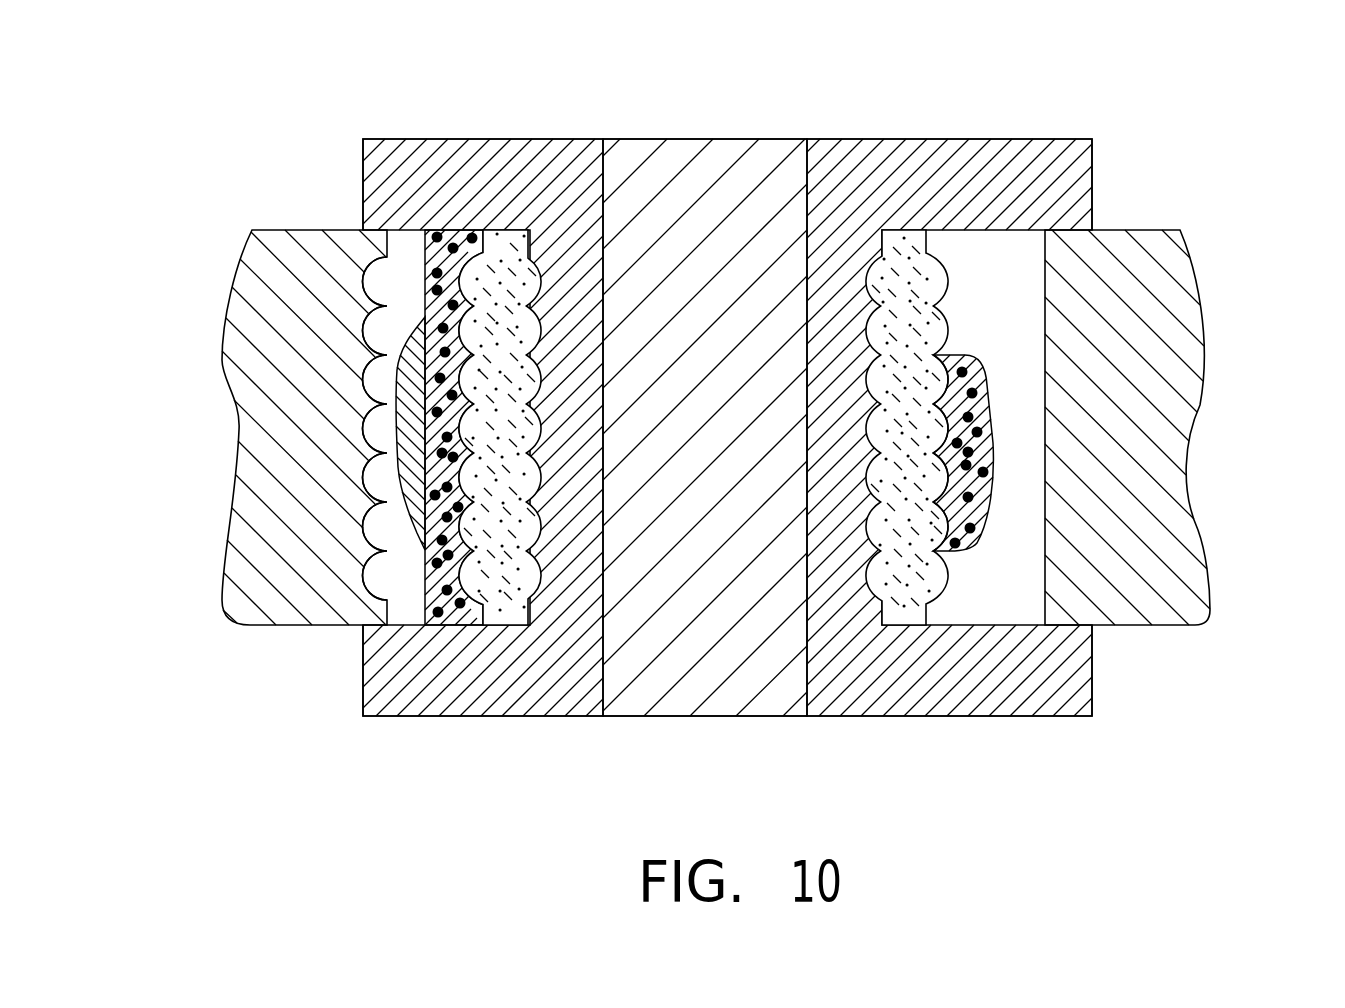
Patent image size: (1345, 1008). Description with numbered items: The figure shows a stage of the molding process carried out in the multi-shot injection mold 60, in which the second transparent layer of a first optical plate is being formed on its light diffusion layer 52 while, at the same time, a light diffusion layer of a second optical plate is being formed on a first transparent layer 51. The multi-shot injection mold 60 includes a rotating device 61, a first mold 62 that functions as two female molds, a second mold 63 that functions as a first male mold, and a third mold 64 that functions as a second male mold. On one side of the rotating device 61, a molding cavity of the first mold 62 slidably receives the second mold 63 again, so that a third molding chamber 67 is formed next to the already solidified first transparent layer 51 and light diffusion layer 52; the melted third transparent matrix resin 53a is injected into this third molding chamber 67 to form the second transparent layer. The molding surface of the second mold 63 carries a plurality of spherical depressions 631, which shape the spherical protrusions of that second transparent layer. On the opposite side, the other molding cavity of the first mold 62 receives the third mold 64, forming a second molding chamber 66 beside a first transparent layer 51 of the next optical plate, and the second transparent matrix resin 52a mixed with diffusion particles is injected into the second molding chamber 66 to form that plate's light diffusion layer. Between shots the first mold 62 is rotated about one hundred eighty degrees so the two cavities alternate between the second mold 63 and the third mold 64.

The multi-shot injection mold 60 is at (737, 58).
The rotating device 61 is at (718, 147).
The first mold 62 is at (932, 155).
The second mold 63 is at (275, 480).
The spherical depressions 631 is at (388, 576).
The third mold 64 is at (1152, 406).
The second molding chamber 66 is at (993, 608).
The third molding chamber 67 is at (400, 526).
The first transparent layer 51 is at (518, 615).
The light diffusion layer 52 is at (465, 617).
The second transparent matrix resin 52a is at (965, 356).
The third transparent matrix resin 53a is at (407, 383).